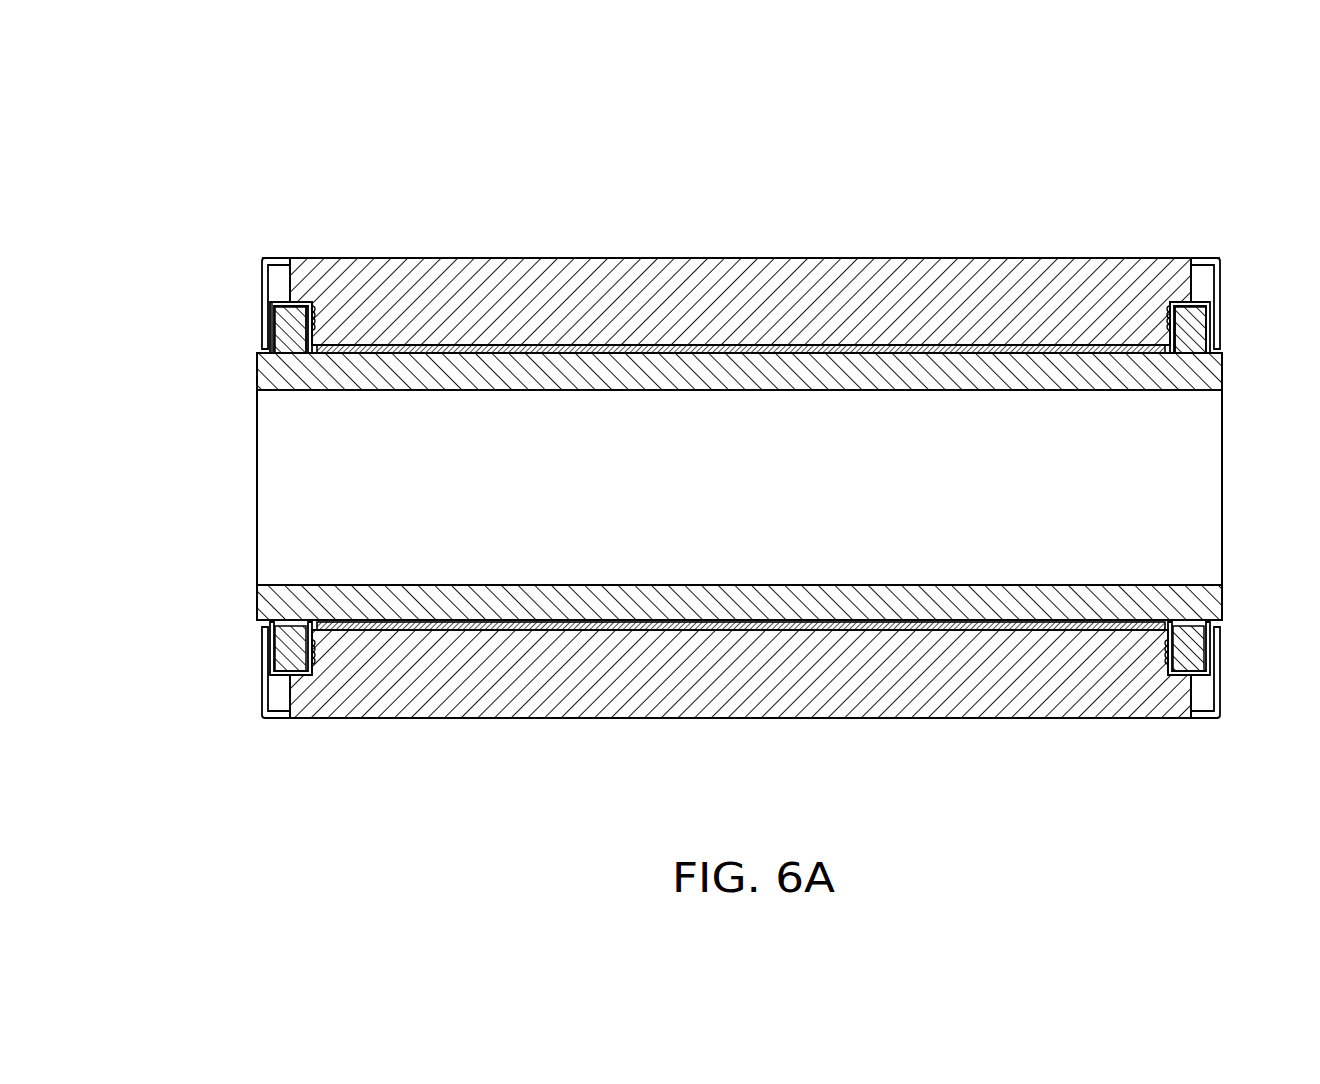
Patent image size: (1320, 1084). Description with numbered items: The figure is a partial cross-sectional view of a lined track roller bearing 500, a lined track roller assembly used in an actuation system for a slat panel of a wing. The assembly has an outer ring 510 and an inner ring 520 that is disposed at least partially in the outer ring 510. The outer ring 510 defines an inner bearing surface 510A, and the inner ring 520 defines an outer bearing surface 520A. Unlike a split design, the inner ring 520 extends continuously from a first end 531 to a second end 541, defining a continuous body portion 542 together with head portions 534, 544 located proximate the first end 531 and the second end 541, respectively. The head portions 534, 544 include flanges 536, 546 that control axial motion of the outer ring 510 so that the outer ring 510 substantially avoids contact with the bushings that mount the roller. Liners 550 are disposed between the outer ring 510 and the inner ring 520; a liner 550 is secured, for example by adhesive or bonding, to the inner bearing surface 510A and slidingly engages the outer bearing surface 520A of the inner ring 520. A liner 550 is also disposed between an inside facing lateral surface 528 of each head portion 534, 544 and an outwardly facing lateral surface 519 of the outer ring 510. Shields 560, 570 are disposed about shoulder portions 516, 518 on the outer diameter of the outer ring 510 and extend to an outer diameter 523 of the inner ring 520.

The lined track roller bearing 500 is at (1053, 175).
The outer ring 510 is at (973, 258).
The inner bearing surface 510A is at (568, 630).
The shoulder portion 516 is at (290, 257).
The shoulder portion 518 is at (1196, 258).
The outwardly facing lateral surface 519 is at (297, 335).
The inner ring 520 is at (250, 407).
The outer bearing surface 520A is at (686, 626).
The outer diameter 523 is at (266, 351).
The inside facing lateral surface 528 is at (310, 306).
The first end 531 is at (257, 370).
The head portion 534 is at (302, 300).
The flange 536 is at (271, 326).
The second end 541 is at (1234, 380).
The continuous body portion 542 is at (898, 393).
The head portion 544 is at (1203, 298).
The flange 546 is at (1214, 326).
The liner 550 is at (315, 326).
The shield 560 is at (262, 281).
The shield 570 is at (1218, 653).